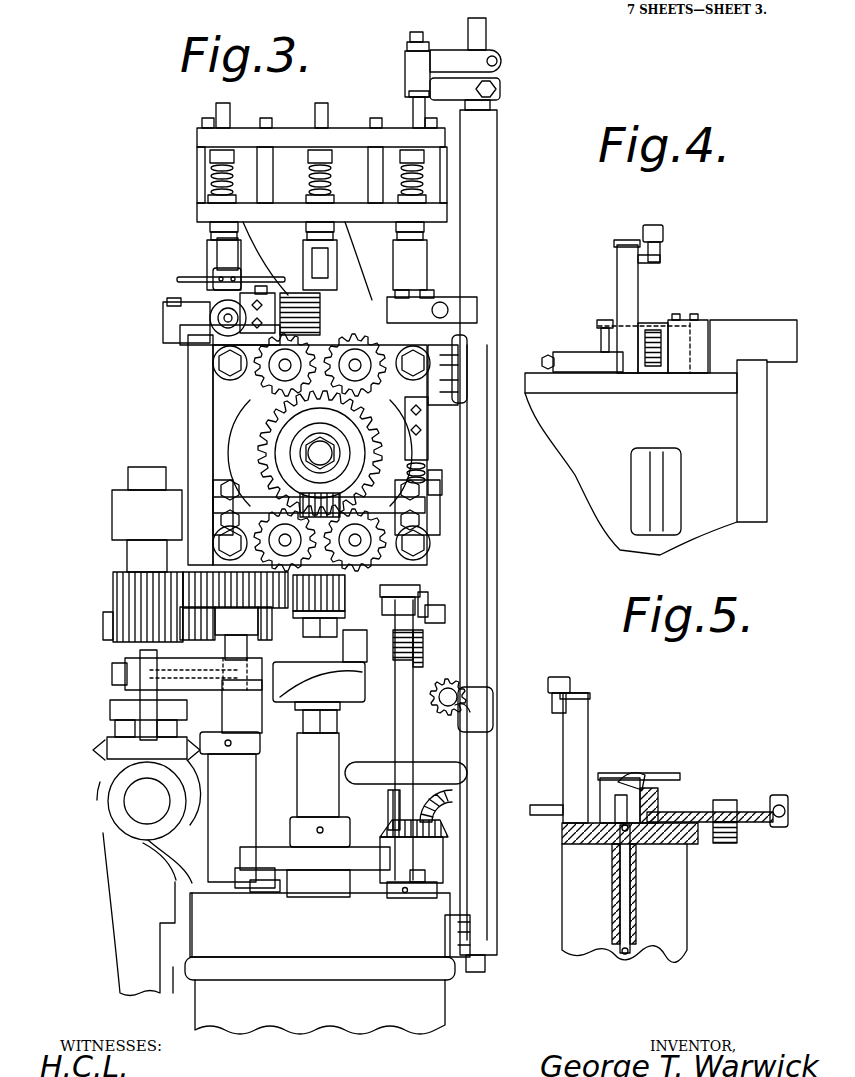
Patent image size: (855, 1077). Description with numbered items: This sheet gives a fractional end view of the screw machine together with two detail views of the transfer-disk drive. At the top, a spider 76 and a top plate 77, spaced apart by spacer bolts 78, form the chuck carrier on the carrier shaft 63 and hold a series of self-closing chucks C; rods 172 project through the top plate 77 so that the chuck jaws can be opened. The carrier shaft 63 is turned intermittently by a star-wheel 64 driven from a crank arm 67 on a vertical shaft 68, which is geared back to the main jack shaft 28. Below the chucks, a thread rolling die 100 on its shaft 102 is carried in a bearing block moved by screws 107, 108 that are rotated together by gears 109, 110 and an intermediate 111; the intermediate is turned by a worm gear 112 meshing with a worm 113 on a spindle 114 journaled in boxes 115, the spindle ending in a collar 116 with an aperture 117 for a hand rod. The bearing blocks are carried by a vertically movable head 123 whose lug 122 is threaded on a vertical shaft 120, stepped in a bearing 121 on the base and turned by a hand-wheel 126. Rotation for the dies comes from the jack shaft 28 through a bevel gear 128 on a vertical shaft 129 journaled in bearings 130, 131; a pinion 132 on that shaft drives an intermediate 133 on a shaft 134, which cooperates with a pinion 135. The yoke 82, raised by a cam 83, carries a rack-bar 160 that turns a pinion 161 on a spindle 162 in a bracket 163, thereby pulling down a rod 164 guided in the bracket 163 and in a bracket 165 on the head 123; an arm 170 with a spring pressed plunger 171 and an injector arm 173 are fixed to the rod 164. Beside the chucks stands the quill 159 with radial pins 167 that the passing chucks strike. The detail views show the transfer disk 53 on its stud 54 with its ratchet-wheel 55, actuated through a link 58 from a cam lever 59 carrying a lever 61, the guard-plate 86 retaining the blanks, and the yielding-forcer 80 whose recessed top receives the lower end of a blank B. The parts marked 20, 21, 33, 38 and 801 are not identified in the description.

In FIG. 3, the top plate 77 is at (288, 128).
In FIG. 3, the spacer bolts 78 is at (258, 168).
In FIG. 3, the spider 76 is at (207, 212).
In FIG. 3, the arm 170 is at (440, 66).
In FIG. 3, the spring pressed plunger 171 is at (405, 100).
In FIG. 3, the rods 172 is at (408, 108).
In FIG. 3, the injector arm 173 is at (485, 80).
In FIG. 3, the rod 164 is at (478, 103).
In FIG. 3, the bracket 165 is at (472, 187).
In FIG. 3, the chucks C is at (207, 250).
In FIG. 3, the thread rolling die 100 is at (307, 261).
In FIG. 3, the quill 159 is at (227, 262).
In FIG. 3, the pins 167 is at (177, 281).
In FIG. 3, the shaft 102 is at (323, 314).
In FIG. 3, the screw 107 is at (273, 367).
In FIG. 3, the screw 108 is at (425, 345).
In FIG. 3, the gear 109 is at (272, 383).
In FIG. 3, the gear 110 is at (430, 378).
In FIG. 3, the intermediate 111 is at (430, 430).
In FIG. 3, the worm gear 112 is at (287, 453).
In FIG. 3, the worm 113 is at (430, 465).
In FIG. 3, the spindle 114 is at (440, 487).
In FIG. 3, the boxes 115 is at (217, 497).
In FIG. 3, the collar 116 is at (422, 520).
In FIG. 3, the aperture 117 is at (439, 509).
In FIG. 3, the lug 122 is at (445, 605).
In FIG. 3, the vertically movable head 123 is at (196, 420).
In FIG. 3, the vertical shaft 129 is at (135, 557).
In FIG. 3, the bearing 131 is at (113, 512).
In FIG. 3, the pinion 132 is at (197, 590).
In FIG. 3, the intermediate 133 is at (107, 643).
In FIG. 3, the shaft 134 is at (117, 655).
In FIG. 3, the bearing 130 is at (115, 702).
In FIG. 3, the bevel gear 128 is at (68, 800).
In FIG. 3, the jack shaft 28 is at (125, 803).
In FIG. 3, the ring 33 is at (122, 818).
In FIG. 3, the vertical shaft 68 is at (232, 762).
In FIG. 3, the crank arm 67 is at (262, 878).
In FIG. 3, the cam 83 is at (320, 690).
In FIG. 3, the carrier shaft 63 is at (300, 780).
In FIG. 3, the star-wheel 64 is at (318, 860).
In FIG. 3, the base 20 is at (312, 950).
In FIG. 3, the bed 21 is at (290, 1025).
In FIG. 3, the pinion 135 is at (418, 620).
In FIG. 3, the yoke 82 is at (503, 608).
In FIG. 3, the rack-bar 160 is at (493, 646).
In FIG. 3, the vertical shaft 120 is at (405, 672).
In FIG. 3, the spindle 162 is at (458, 697).
In FIG. 3, the pinion 161 is at (462, 722).
In FIG. 3, the hand-wheel 126 is at (462, 772).
In FIG. 3, the bearing 121 is at (410, 890).
In FIG. 3, the bracket 163 is at (478, 887).
In FIG. 4, the lever 61 is at (645, 235).
In FIG. 5, the lever 61 is at (570, 683).
In FIG. 4, the stud 54 is at (617, 244).
In FIG. 5, the stud 54 is at (580, 698).
In FIG. 4, the link 58 is at (563, 352).
In FIG. 4, the cam lever 59 is at (588, 352).
In FIG. 4, the ratchet-wheel 55 is at (660, 325).
In FIG. 5, the ratchet-wheel 55 is at (650, 790).
In FIG. 4, the frame 38 is at (620, 393).
In FIG. 5, the frame 38 is at (680, 895).
In FIG. 4, the slot 801 is at (658, 494).
In FIG. 5, the slot 801 is at (630, 940).
In FIG. 5, the blank B is at (565, 771).
In FIG. 5, the transfer disk 53 is at (650, 785).
In FIG. 5, the guard-plate 86 is at (632, 775).
In FIG. 5, the yielding-forcer 80 is at (652, 785).